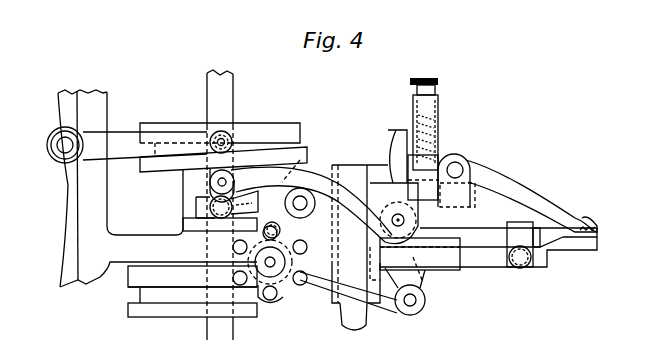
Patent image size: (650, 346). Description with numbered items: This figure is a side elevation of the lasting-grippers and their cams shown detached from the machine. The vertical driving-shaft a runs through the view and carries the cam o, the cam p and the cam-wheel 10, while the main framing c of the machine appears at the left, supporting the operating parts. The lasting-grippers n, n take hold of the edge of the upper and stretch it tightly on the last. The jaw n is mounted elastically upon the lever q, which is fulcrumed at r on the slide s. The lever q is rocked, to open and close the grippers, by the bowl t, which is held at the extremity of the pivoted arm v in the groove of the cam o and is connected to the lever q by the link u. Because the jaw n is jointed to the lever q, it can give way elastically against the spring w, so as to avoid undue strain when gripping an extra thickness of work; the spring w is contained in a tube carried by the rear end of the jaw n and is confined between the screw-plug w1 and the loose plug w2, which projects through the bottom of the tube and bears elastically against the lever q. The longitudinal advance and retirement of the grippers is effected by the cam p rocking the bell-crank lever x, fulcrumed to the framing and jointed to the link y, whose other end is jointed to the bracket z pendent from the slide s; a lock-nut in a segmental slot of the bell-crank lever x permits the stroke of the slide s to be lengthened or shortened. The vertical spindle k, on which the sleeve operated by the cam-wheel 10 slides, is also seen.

The driving-shaft a is at (217, 102).
The main framing c is at (157, 188).
The pivoted arm v is at (127, 145).
The bowl t is at (229, 132).
The cam o is at (285, 138).
The link u is at (233, 163).
The cam p is at (197, 205).
The bell-crank lever x is at (253, 210).
The gear g is at (312, 285).
The vertical spindle k is at (348, 315).
The link y is at (387, 302).
The bracket z is at (405, 286).
The slide s is at (427, 252).
The lever q is at (375, 216).
The fulcrum r is at (399, 219).
The spring w is at (434, 132).
The screw-plug w1 is at (438, 90).
The loose plug w2 is at (447, 158).
The lasting-gripper jaw n is at (488, 233).
The cam-wheel 10 is at (192, 295).